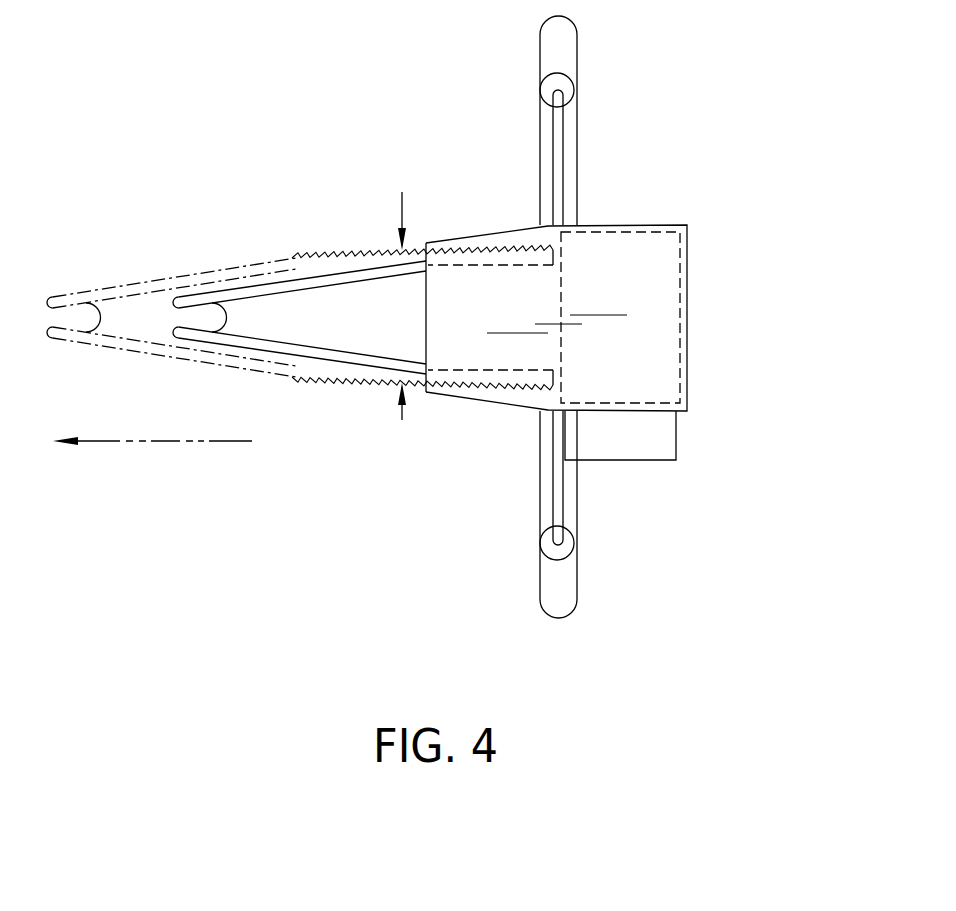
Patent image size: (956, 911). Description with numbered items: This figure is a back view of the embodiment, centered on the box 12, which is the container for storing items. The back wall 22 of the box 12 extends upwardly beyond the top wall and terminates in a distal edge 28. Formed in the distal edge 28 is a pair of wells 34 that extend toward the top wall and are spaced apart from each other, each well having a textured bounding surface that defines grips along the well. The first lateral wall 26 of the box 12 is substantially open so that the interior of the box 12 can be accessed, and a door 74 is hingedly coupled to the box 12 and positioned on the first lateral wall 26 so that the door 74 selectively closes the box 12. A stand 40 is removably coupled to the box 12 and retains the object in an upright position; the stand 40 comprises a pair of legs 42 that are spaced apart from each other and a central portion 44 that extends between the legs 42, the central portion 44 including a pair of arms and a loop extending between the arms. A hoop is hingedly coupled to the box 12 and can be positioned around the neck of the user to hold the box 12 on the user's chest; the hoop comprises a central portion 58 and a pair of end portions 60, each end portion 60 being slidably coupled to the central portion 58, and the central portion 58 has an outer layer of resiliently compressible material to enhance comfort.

The box 12 is at (687, 226).
The back wall 22 is at (653, 383).
The first lateral wall 26 is at (652, 445).
The distal edge 28 is at (247, 322).
The wells 34 is at (448, 257).
The stand 40 is at (226, 252).
The legs 42 is at (333, 277).
The central portion 44 is at (150, 322).
The central portion 58 is at (533, 317).
The end portions 60 is at (565, 167).
The door 74 is at (556, 432).